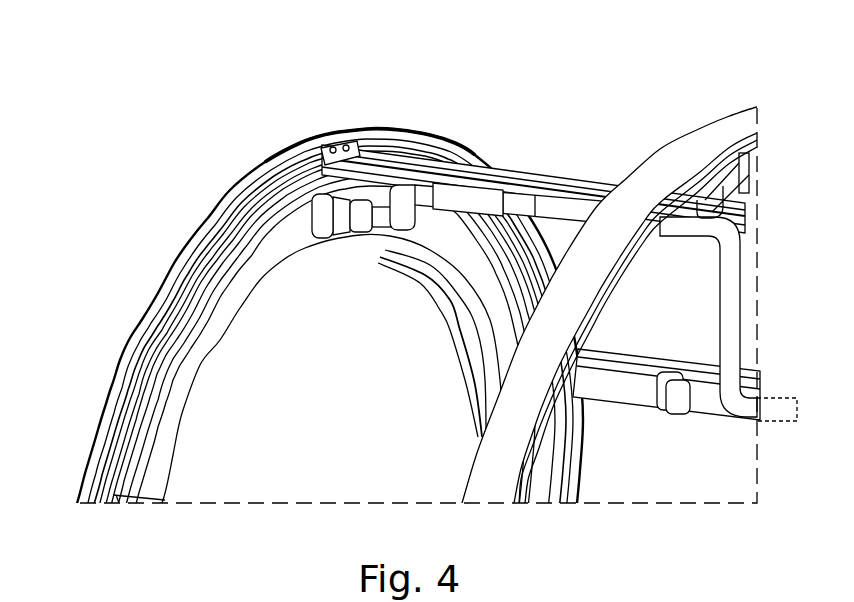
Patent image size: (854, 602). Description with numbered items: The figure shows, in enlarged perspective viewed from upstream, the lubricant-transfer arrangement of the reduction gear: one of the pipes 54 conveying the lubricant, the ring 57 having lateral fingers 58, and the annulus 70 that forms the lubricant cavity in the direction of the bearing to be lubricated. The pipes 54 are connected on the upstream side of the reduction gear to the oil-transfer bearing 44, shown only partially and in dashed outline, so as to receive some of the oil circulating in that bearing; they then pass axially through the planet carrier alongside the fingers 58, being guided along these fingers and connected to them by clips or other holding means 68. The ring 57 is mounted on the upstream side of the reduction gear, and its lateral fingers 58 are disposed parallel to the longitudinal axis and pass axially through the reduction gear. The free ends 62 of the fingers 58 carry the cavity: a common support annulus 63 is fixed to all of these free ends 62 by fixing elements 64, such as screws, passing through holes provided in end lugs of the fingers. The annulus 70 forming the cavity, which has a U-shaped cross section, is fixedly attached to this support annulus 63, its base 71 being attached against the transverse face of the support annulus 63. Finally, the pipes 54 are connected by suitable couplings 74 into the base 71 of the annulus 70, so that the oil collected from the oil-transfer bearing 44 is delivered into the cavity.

The oil-transfer bearing 44 is at (797, 405).
The pipes 54 is at (577, 212).
The ring 57 is at (735, 103).
The lateral fingers 58 is at (530, 167).
The free ends 62 is at (320, 153).
The support annulus 63 is at (402, 122).
The fixing elements 64 is at (344, 140).
The clips 68 is at (484, 200).
The annulus forming the cavity 70 is at (102, 369).
The base 71 is at (197, 367).
The couplings 74 is at (335, 231).